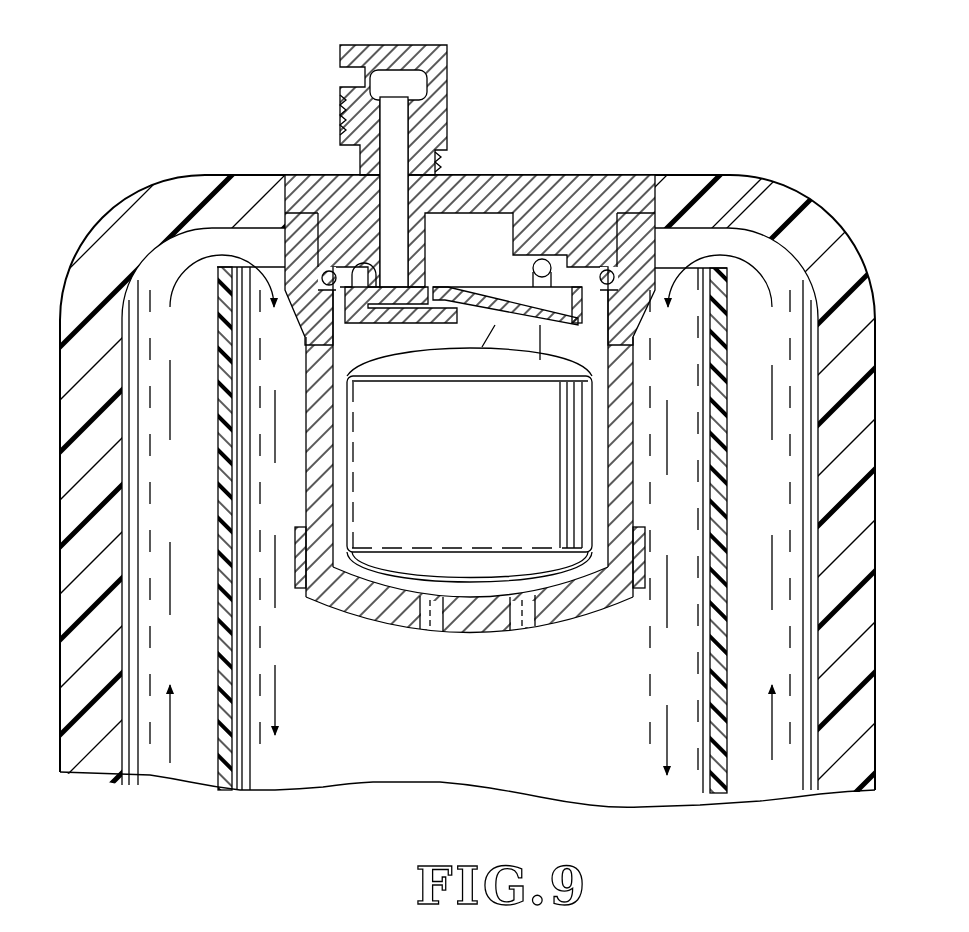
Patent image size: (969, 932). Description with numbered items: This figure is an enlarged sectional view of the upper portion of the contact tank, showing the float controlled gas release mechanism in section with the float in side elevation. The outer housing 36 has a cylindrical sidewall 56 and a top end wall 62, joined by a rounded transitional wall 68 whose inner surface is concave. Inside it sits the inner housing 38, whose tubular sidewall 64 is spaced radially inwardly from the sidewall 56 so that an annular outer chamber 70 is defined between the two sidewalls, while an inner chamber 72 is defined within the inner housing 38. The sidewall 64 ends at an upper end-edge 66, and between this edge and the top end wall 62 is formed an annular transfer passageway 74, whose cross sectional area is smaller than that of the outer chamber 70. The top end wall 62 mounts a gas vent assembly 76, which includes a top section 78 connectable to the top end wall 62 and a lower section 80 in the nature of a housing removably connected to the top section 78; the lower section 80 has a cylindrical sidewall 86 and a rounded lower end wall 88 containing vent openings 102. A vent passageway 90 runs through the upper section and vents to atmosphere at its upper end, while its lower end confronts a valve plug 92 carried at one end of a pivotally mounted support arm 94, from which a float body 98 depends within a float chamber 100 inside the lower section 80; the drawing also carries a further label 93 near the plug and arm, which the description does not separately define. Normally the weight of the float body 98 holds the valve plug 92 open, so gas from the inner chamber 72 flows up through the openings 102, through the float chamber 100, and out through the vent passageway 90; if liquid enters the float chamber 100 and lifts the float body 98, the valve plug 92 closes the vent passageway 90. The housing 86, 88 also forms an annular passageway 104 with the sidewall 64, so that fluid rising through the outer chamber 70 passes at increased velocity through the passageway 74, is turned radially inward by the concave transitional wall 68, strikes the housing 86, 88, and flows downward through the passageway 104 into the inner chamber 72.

The outer housing 36 is at (58, 757).
The inner housing 38 is at (700, 675).
The sidewall 56 is at (62, 470).
The top end wall 62 is at (242, 190).
The tubular sidewall 64 is at (235, 672).
The upper end-edge 66 is at (225, 267).
The rounded transitional wall 68 is at (138, 225).
The outer chamber 70 is at (157, 503).
The inner chamber 72 is at (300, 765).
The transfer passageway 74 is at (745, 245).
The gas vent assembly 76 is at (580, 160).
The top section 78 is at (605, 195).
The lower section 80 is at (485, 632).
The cylindrical sidewall 86 is at (628, 372).
The rounded lower end wall 88 is at (462, 628).
The vent passageway 90 is at (395, 193).
The valve plug 92 is at (345, 76).
The ball pivot 93 is at (437, 283).
The support arm 94 is at (500, 298).
The float body 98 is at (449, 465).
The float chamber 100 is at (576, 578).
The vent openings 102 is at (420, 630).
The annular passageway 104 is at (702, 512).